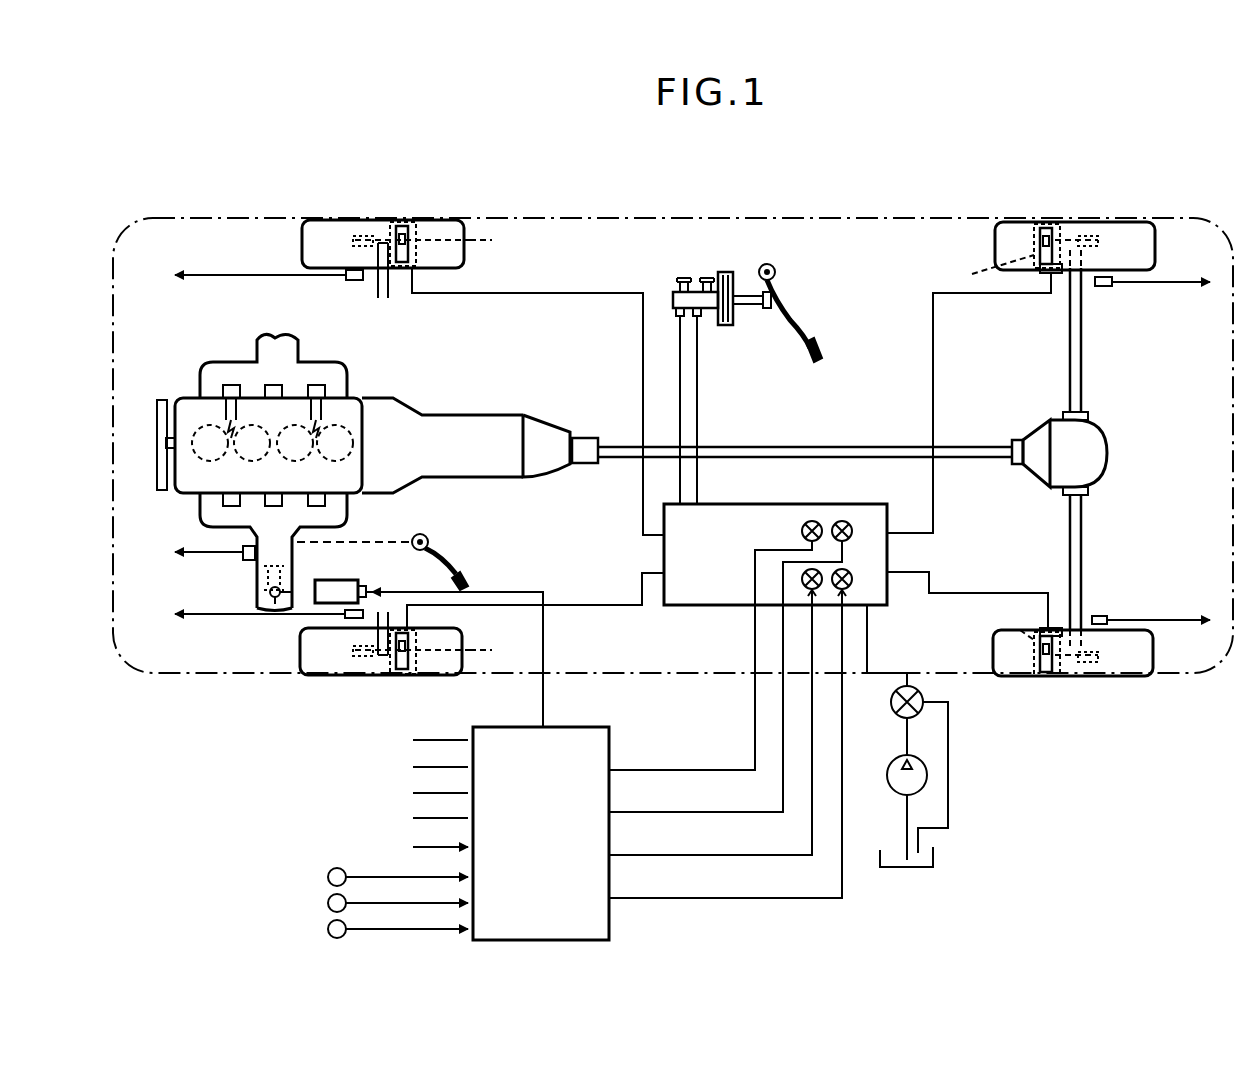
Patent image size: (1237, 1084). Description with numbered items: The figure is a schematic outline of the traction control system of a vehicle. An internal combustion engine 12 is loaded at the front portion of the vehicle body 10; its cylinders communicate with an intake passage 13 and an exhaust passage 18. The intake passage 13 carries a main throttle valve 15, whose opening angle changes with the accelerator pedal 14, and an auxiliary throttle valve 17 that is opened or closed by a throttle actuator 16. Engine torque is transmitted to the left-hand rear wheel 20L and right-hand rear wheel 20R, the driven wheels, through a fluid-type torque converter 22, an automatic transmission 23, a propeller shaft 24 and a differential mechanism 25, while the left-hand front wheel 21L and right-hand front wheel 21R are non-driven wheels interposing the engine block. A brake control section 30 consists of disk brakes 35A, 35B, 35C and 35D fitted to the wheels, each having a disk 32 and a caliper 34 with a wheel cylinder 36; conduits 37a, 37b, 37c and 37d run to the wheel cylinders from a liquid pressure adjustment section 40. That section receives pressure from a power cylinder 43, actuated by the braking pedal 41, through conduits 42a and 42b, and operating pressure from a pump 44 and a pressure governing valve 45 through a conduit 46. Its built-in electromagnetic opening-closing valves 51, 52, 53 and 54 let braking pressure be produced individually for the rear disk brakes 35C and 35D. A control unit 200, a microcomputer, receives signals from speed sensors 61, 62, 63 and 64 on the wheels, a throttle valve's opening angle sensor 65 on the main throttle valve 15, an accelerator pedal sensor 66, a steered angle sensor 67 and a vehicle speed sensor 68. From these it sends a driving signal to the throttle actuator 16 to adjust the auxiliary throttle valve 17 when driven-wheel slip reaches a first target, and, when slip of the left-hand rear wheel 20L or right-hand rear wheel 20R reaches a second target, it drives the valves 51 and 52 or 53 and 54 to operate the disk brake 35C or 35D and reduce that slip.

The body 10 is at (215, 218).
The internal combustion engine 12 is at (185, 392).
The intake passage 13 is at (213, 527).
The accelerator pedal 14 is at (432, 521).
The main throttle valve 15 is at (292, 566).
The throttle actuator 16 is at (340, 588).
The auxiliary throttle valve 17 is at (257, 592).
The exhaust passage 18 is at (298, 345).
The right-hand rear wheel 20R is at (995, 240).
The left-hand rear wheel 20L is at (993, 645).
The right-hand front wheel 21R is at (302, 237).
The left-hand front wheel 21L is at (300, 645).
The fluid-type torque converter 22 is at (393, 405).
The automatic transmission 23 is at (498, 476).
The propeller shaft 24 is at (618, 445).
The differential mechanism 25 is at (1093, 430).
The brake control section 30 is at (744, 492).
The disk 32 is at (362, 236).
The caliper 34 is at (717, 450).
The disk brake 35A is at (400, 707).
The disk brake 35B is at (435, 186).
The disk brake 35C is at (1102, 712).
The disk brake 35D is at (1100, 186).
The wheel cylinder 36 is at (752, 445).
The conduit 37a is at (597, 605).
The conduit 37b is at (582, 293).
The conduit 37c is at (983, 593).
The conduit 37d is at (933, 320).
The liquid pressure adjustment section 40 is at (783, 504).
The braking pedal 41 is at (800, 322).
The conduit 42a is at (697, 356).
The conduit 42b is at (683, 385).
The power cylinder 43 is at (673, 298).
The pump 44 is at (890, 785).
The pressure governing valve 45 is at (891, 700).
The conduit 46 is at (867, 618).
The electromagnetic opening-closing valve 51 is at (852, 577).
The electromagnetic opening-closing valve 52 is at (802, 578).
The electromagnetic opening-closing valve 53 is at (850, 521).
The electromagnetic opening-closing valve 54 is at (812, 521).
The speed sensor 61 is at (363, 610).
The speed sensor 62 is at (354, 281).
The speed sensor 63 is at (1100, 614).
The speed sensor 64 is at (1104, 287).
The throttle valve's opening angle sensor 65 is at (240, 556).
The accelerator pedal sensor 66 is at (328, 876).
The steered angle sensor 67 is at (328, 902).
The vehicle speed sensor 68 is at (328, 928).
The control unit 200 is at (590, 727).